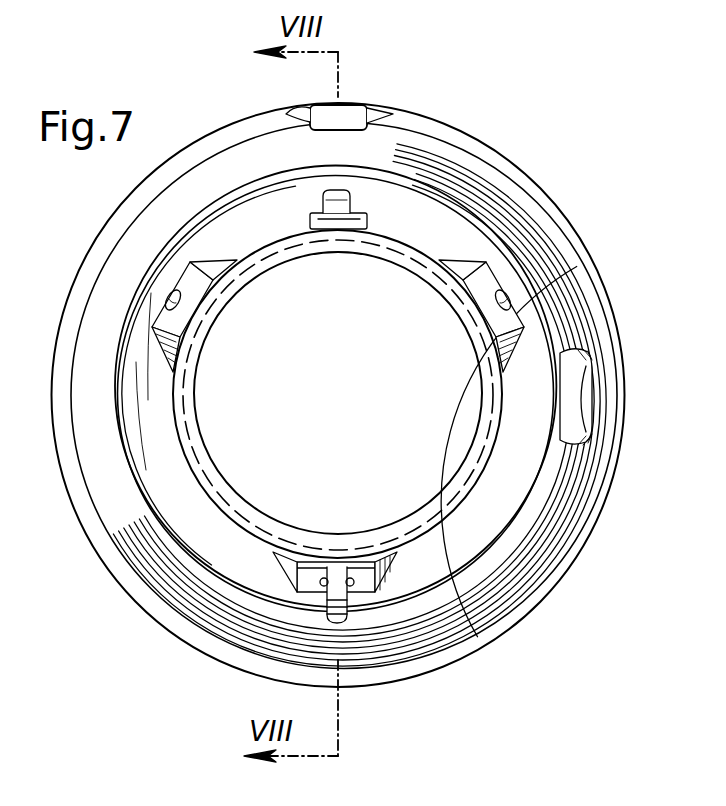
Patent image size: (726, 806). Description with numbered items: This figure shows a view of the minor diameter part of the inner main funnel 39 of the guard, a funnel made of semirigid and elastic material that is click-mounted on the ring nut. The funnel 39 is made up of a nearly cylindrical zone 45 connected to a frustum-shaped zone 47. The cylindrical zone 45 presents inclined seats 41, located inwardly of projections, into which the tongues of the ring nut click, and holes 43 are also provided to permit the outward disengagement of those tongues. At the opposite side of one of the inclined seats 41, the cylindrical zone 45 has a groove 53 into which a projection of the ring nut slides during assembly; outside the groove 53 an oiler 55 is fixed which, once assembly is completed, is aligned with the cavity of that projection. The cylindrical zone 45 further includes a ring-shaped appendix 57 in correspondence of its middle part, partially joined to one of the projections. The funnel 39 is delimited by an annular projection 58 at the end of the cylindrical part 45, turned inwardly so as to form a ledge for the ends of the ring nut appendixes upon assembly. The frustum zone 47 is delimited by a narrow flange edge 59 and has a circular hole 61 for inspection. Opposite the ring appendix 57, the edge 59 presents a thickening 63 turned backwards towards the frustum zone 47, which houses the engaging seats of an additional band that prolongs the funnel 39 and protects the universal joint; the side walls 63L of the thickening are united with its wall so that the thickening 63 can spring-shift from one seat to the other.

The inner main funnel 39 is at (545, 192).
The frustum-shaped zone 47 is at (107, 277).
The narrow flange edge 59 is at (556, 583).
The thickening 63 is at (350, 107).
The side walls of the thickening 63L is at (287, 108).
The circular hole 61 is at (583, 372).
The cylindrical zone 45 is at (483, 481).
The annular projection 58 is at (205, 467).
The groove 53 is at (346, 255).
The oiler 55 is at (352, 198).
The inclined seats 41 is at (471, 283).
The holes 43 is at (483, 309).
The ring-shaped appendix 57 is at (358, 618).